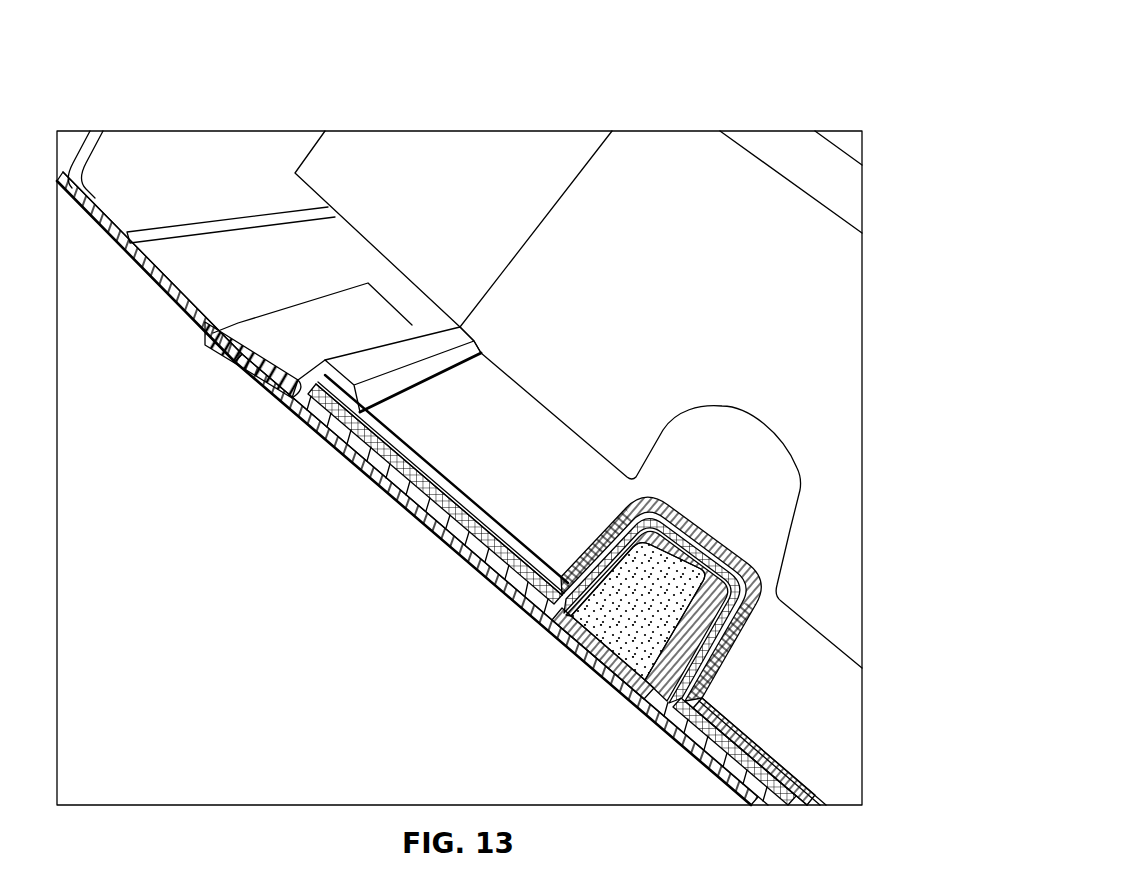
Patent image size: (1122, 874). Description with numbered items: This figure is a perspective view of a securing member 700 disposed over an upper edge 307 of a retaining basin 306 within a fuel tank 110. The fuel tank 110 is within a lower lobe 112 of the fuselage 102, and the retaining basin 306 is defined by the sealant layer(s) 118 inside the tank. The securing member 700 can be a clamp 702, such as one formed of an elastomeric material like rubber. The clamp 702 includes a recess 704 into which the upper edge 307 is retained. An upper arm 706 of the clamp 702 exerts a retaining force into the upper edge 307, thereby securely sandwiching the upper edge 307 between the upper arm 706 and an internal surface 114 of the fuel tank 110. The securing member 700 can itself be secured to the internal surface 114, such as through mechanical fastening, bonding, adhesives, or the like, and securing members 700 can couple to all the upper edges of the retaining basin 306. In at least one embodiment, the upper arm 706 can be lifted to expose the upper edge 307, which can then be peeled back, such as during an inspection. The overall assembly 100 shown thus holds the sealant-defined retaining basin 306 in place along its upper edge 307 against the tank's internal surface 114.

The connector assembly 100 is at (710, 116).
The fuel tank 110 is at (898, 397).
The lower lobe 112 is at (465, 662).
The fuselage 102 is at (623, 693).
The internal surface 114 is at (347, 442).
The sealant layer 118 is at (368, 445).
The retaining basin 306 is at (440, 524).
The upper edge 307 is at (320, 403).
The securing member 700 is at (282, 353).
The clamp 702 is at (422, 328).
The recess 704 is at (340, 407).
The upper arm 706 is at (460, 342).